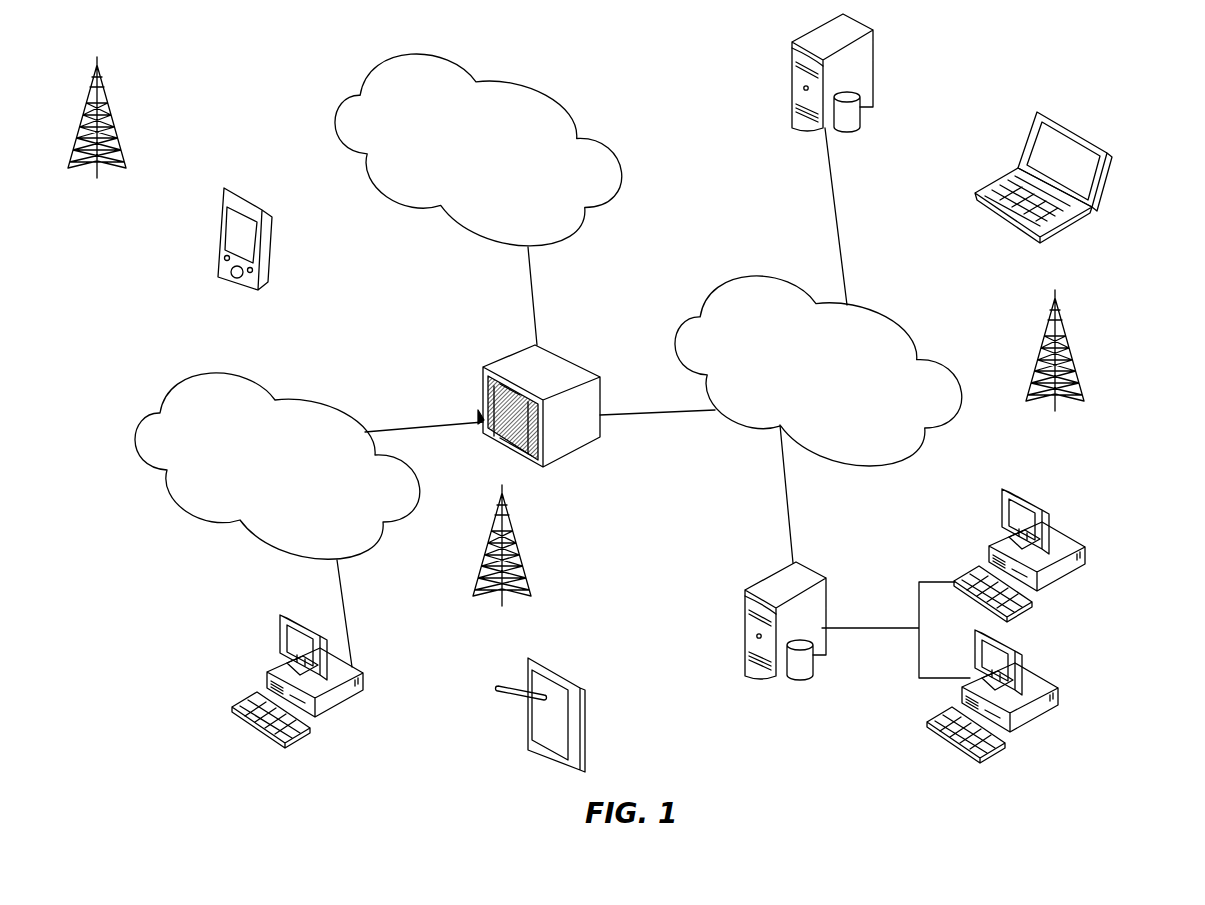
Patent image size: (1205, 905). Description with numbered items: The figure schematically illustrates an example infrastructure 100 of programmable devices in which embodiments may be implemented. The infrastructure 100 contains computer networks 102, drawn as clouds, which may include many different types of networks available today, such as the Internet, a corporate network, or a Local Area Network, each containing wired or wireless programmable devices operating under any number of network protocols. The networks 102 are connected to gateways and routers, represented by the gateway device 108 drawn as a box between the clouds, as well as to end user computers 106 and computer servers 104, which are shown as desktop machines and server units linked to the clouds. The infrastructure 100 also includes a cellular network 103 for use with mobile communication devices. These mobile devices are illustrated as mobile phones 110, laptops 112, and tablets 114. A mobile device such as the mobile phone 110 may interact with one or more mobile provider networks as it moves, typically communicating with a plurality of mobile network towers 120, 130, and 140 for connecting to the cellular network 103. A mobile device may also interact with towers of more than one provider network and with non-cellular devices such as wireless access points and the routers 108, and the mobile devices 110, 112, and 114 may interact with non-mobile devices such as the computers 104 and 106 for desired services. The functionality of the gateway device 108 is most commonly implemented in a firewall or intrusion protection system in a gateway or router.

The infrastructure 100 is at (955, 104).
The computer networks 102 is at (263, 388).
The cellular network 103 is at (525, 88).
The computer servers 104 is at (793, 65).
The end user computers 106 is at (363, 673).
The gateways and routers 108 is at (560, 357).
The mobile phones 110 is at (252, 193).
The laptops 112 is at (1083, 137).
The tablets 114 is at (565, 672).
The mobile network tower 120 is at (502, 561).
The mobile network tower 130 is at (1055, 366).
The mobile network tower 140 is at (97, 133).